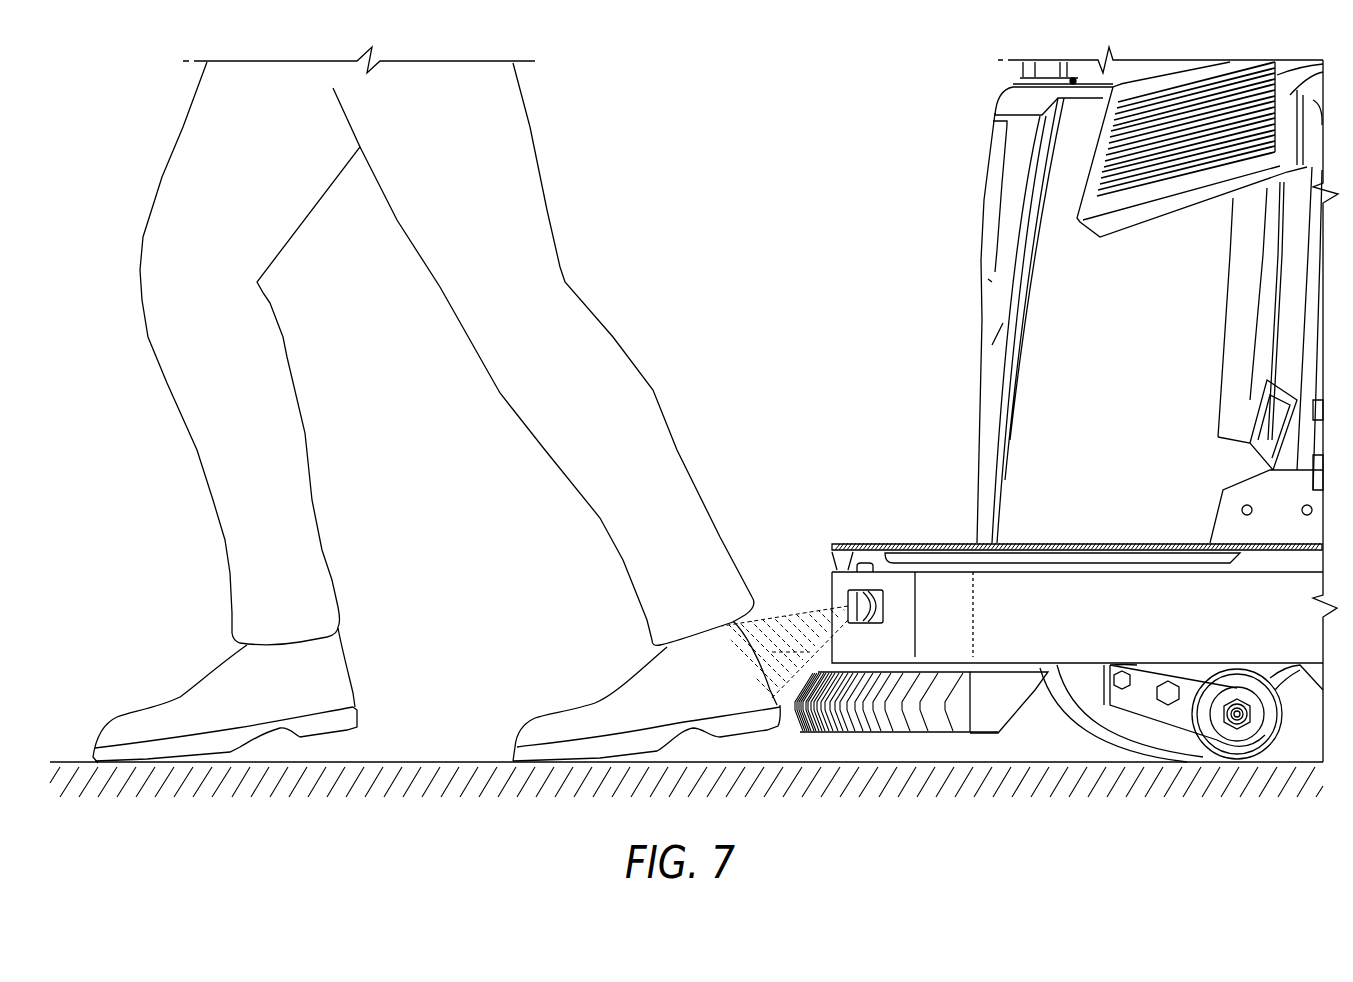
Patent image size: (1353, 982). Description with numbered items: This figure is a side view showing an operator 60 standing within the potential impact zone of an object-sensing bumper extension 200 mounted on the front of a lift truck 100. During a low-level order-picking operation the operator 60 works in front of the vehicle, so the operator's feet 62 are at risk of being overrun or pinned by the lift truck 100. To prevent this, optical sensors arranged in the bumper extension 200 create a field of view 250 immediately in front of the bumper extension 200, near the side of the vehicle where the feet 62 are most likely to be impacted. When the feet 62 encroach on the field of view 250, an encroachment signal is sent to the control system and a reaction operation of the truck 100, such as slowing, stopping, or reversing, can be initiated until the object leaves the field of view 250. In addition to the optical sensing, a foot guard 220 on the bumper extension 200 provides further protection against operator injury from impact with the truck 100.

The operator 60 is at (572, 170).
The operator's feet 62 is at (590, 703).
The lift truck 100 is at (960, 255).
The object-sensing bumper extension 200 is at (812, 555).
The foot guard 220 is at (816, 745).
The field of view 250 is at (784, 635).